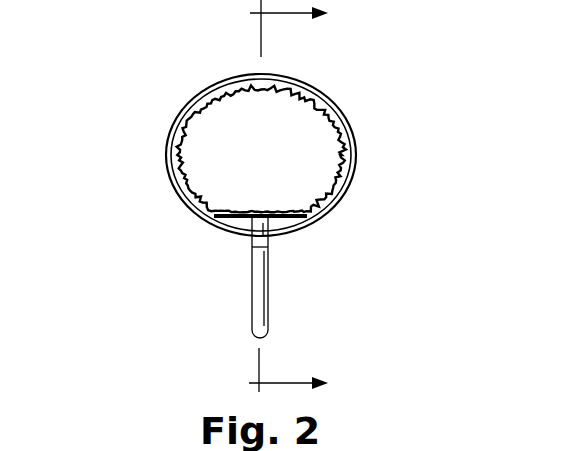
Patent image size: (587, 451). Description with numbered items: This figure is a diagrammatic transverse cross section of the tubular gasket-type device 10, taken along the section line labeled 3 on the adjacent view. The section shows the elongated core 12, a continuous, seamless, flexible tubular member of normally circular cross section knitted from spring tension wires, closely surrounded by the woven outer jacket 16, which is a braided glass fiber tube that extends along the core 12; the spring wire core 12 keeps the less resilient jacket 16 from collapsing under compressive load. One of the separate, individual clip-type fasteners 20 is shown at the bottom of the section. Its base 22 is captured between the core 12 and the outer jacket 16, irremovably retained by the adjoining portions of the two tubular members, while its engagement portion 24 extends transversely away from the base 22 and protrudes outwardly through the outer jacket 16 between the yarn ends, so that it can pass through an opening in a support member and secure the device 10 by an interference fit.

The section line 3- 3 is at (302, 200).
The tubular gasket-type device 10 is at (356, 108).
The elongated core 12 is at (199, 154).
The woven outer jacket 16 is at (154, 174).
The fastener 20 is at (238, 265).
The base 22 is at (229, 210).
The engagement portion 24 is at (268, 295).